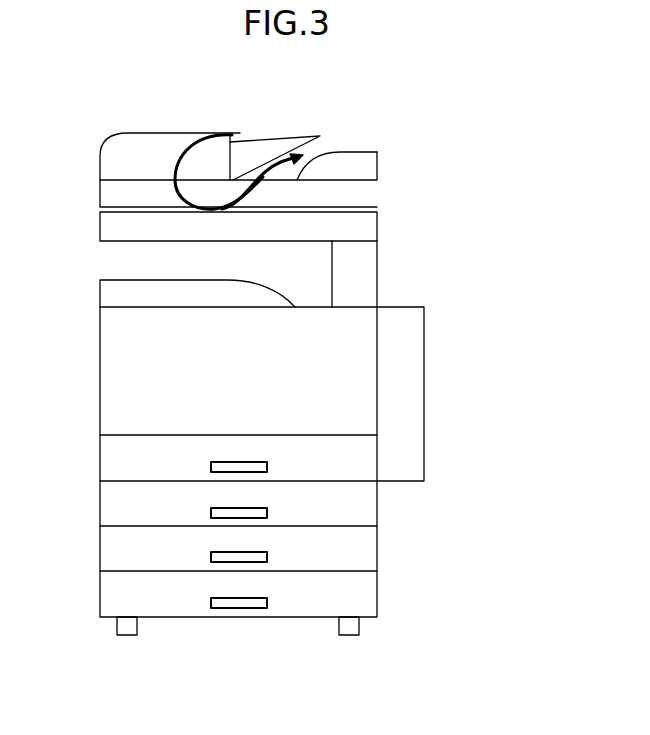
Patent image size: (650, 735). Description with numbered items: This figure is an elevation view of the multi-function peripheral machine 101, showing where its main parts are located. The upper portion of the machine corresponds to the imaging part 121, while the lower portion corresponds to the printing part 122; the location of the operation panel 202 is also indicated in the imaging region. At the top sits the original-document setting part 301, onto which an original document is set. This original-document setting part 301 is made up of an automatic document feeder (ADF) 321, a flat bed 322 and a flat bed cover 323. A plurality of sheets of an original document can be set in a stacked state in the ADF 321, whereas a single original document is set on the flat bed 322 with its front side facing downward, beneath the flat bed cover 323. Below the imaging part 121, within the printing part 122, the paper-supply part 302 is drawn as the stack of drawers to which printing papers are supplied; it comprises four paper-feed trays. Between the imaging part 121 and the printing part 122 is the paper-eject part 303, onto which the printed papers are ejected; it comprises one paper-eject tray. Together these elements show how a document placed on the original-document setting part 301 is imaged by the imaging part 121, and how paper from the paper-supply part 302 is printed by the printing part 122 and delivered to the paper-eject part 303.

The multi-function peripheral machine 101 is at (147, 100).
The imaging part 121 is at (472, 125).
The printing part 122 is at (472, 313).
The original-document setting part 301 is at (118, 159).
The automatic document feeder (ADF) 321 is at (270, 143).
The flat bed 322 is at (313, 205).
The flat bed cover 323 is at (368, 186).
The operation panel 202 is at (368, 223).
The paper-eject part 303 is at (108, 295).
The paper-supply part 302 is at (358, 472).